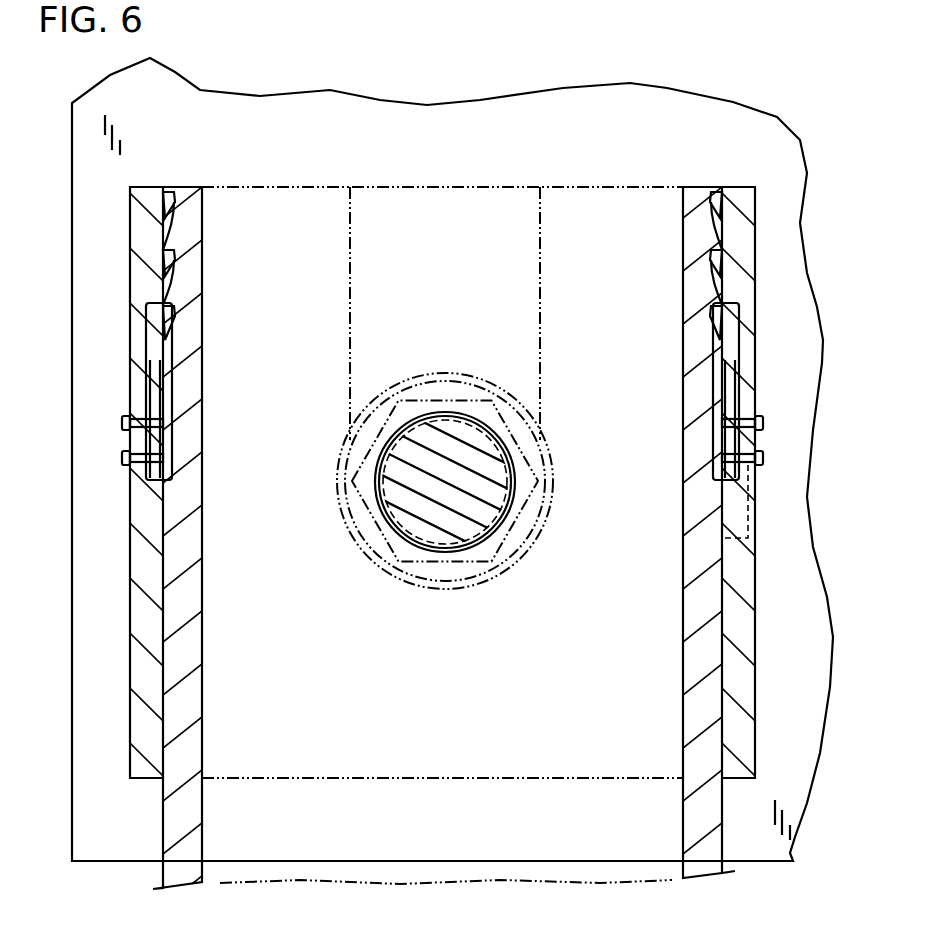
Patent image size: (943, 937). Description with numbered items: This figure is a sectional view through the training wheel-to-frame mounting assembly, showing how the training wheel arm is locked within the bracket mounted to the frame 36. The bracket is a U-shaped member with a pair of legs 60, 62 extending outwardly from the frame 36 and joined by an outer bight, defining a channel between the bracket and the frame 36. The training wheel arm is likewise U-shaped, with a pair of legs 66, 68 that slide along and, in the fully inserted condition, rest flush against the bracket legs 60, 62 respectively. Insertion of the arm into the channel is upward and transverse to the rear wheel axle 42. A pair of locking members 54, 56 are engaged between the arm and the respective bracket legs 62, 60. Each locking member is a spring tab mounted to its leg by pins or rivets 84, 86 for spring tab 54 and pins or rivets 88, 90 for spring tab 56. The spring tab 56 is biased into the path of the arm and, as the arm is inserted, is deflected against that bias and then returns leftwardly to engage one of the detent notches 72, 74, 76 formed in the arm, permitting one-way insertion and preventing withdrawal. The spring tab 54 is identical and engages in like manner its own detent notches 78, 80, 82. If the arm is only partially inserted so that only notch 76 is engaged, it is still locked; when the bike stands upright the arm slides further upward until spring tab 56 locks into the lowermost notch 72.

The frame 36 is at (678, 104).
The rear wheel axle 42 is at (448, 523).
The locking member 54 is at (158, 318).
The locking member 56 is at (745, 300).
The leg 60 is at (742, 658).
The leg 62 is at (140, 672).
The leg 66 is at (697, 630).
The leg 68 is at (188, 660).
The detent 72 is at (714, 305).
The detent 74 is at (714, 262).
The detent 76 is at (714, 198).
The detent notch 78 is at (165, 328).
The detent notch 80 is at (168, 258).
The detent notch 82 is at (168, 200).
The pin or rivet 84 is at (125, 422).
The pin or rivet 86 is at (125, 457).
The pin or rivet 88 is at (762, 420).
The pin or rivet 90 is at (762, 456).